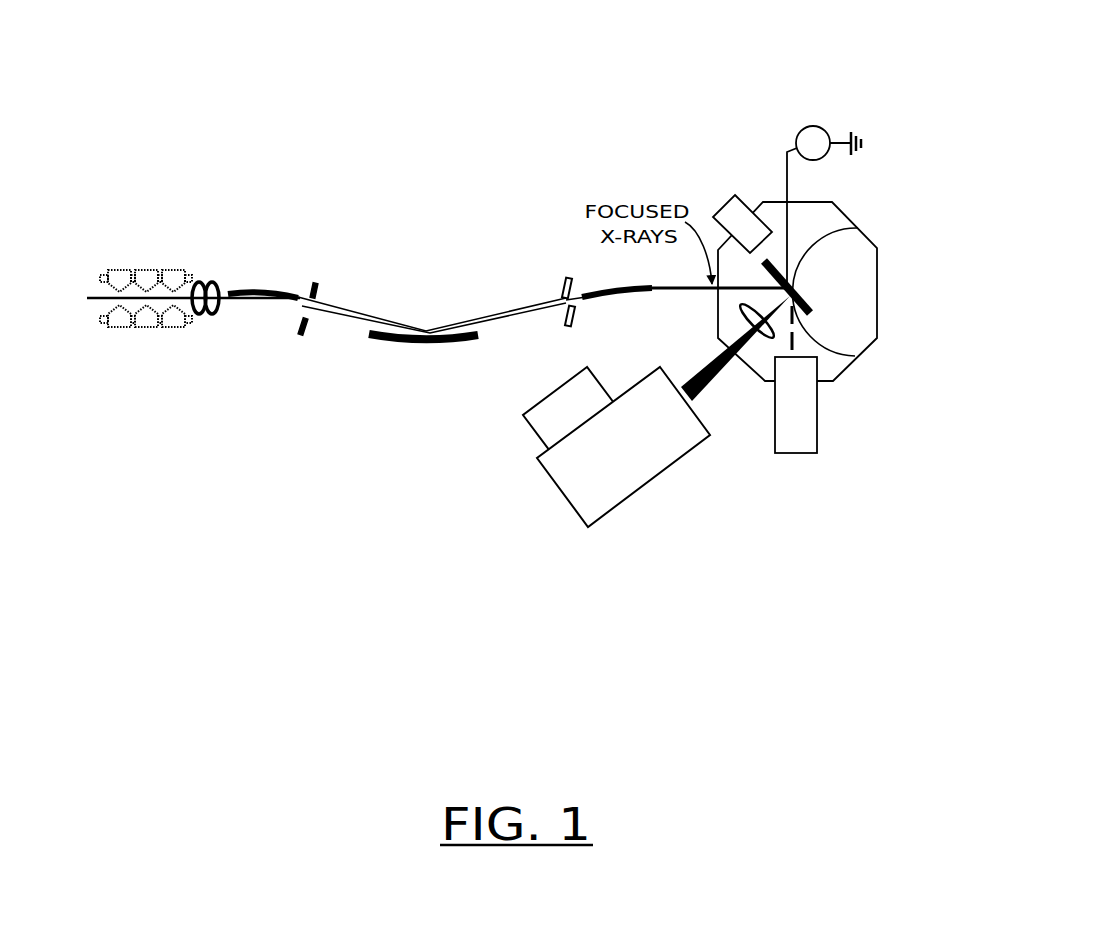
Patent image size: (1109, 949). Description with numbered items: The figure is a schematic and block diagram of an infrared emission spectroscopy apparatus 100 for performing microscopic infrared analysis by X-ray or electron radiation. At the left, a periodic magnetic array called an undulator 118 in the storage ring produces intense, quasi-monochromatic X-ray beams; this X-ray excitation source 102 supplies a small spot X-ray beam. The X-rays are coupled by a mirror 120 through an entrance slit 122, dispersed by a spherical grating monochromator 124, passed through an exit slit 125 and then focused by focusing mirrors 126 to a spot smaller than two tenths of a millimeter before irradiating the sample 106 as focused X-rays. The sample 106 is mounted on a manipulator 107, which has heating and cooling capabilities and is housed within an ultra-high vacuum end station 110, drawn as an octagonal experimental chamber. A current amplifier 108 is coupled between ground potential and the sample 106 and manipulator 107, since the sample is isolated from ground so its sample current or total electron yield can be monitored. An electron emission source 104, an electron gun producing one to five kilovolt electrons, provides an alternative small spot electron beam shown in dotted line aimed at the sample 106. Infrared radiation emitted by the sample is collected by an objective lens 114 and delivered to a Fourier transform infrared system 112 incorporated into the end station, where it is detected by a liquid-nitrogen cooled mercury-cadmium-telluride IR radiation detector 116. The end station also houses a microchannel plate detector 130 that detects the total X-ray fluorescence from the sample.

The infrared emission spectroscopy apparatus 100 is at (538, 41).
The X-ray excitation source 102 is at (312, 160).
The electron excitation source 104 is at (775, 430).
The sample 106 is at (853, 356).
The manipulator 107 is at (858, 228).
The current amplifier 108 is at (816, 125).
The ultra-high vacuum end station 110 is at (816, 196).
The Fourier transform infrared system 112 is at (563, 493).
The objective lens 114 is at (740, 318).
The IR radiation detector 116 is at (538, 400).
The undulator 118 is at (166, 377).
The mirror 120 is at (265, 288).
The entrance slit 122 is at (314, 282).
The spherical grating monochromator 124 is at (420, 344).
The exit slit 125 is at (565, 289).
The focusing mirrors 126 is at (584, 290).
The microchannel plate detector 130 is at (744, 200).